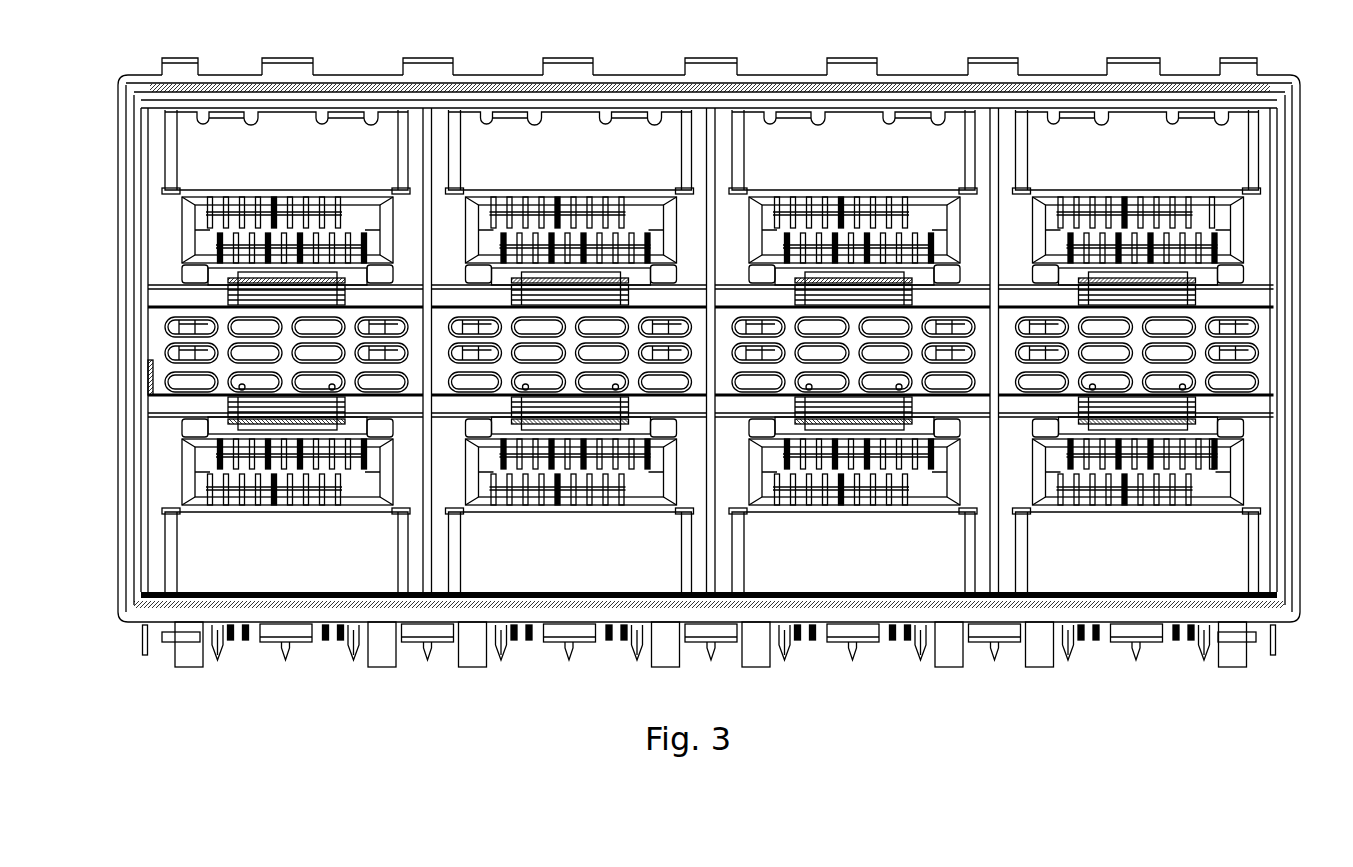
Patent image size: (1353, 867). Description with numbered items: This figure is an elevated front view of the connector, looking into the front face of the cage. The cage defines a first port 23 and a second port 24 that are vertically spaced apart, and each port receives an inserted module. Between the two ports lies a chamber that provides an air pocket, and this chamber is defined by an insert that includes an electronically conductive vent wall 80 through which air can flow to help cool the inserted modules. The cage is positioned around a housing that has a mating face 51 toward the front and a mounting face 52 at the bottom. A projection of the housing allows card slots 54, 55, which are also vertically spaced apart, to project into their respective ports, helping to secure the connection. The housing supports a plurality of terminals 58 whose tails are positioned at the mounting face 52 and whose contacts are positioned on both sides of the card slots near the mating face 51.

The first port 23 is at (197, 160).
The second port 24 is at (212, 532).
The mating face 51 is at (183, 249).
The mounting face 52 is at (338, 653).
The card slot 54 is at (1214, 232).
The card slot 55 is at (1214, 468).
The terminals 58 is at (1045, 233).
The electronically conductive vent wall 80 is at (1252, 337).